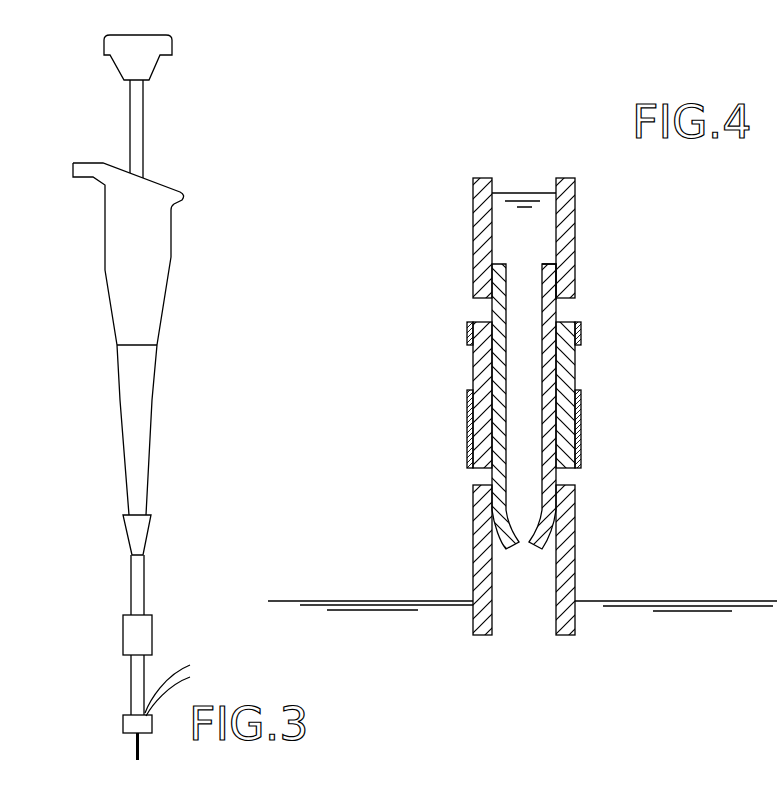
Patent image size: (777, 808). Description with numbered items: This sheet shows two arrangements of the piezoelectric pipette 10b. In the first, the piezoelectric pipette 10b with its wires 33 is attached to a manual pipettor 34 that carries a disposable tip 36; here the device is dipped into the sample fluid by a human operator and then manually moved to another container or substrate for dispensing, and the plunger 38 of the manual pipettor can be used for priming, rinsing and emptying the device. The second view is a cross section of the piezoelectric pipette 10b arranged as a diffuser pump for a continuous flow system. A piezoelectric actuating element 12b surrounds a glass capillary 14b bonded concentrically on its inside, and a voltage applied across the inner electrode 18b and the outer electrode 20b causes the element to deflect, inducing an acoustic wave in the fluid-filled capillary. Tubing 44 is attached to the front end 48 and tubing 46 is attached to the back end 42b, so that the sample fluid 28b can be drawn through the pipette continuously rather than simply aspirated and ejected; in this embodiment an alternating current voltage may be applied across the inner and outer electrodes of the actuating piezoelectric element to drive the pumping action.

In FIG. 3, the plunger 38 is at (145, 128).
In FIG. 3, the manual pipettor 34 is at (117, 362).
In FIG. 3, the disposable tip 36 is at (130, 568).
In FIG. 3, the piezoelectric pipette 10b is at (128, 672).
In FIG. 4, the piezoelectric pipette 10b is at (599, 389).
In FIG. 3, the wires 33 is at (198, 666).
In FIG. 4, the tubing 46 is at (474, 216).
In FIG. 4, the sample fluid 28b is at (535, 223).
In FIG. 4, the back end 42b is at (550, 278).
In FIG. 4, the glass capillary 14b is at (553, 308).
In FIG. 4, the piezoelectric actuating element 12b is at (473, 358).
In FIG. 4, the inner electrode 18b is at (581, 335).
In FIG. 4, the outer electrode 20b is at (578, 448).
In FIG. 4, the tubing 44 is at (473, 505).
In FIG. 4, the front end 48 is at (548, 512).